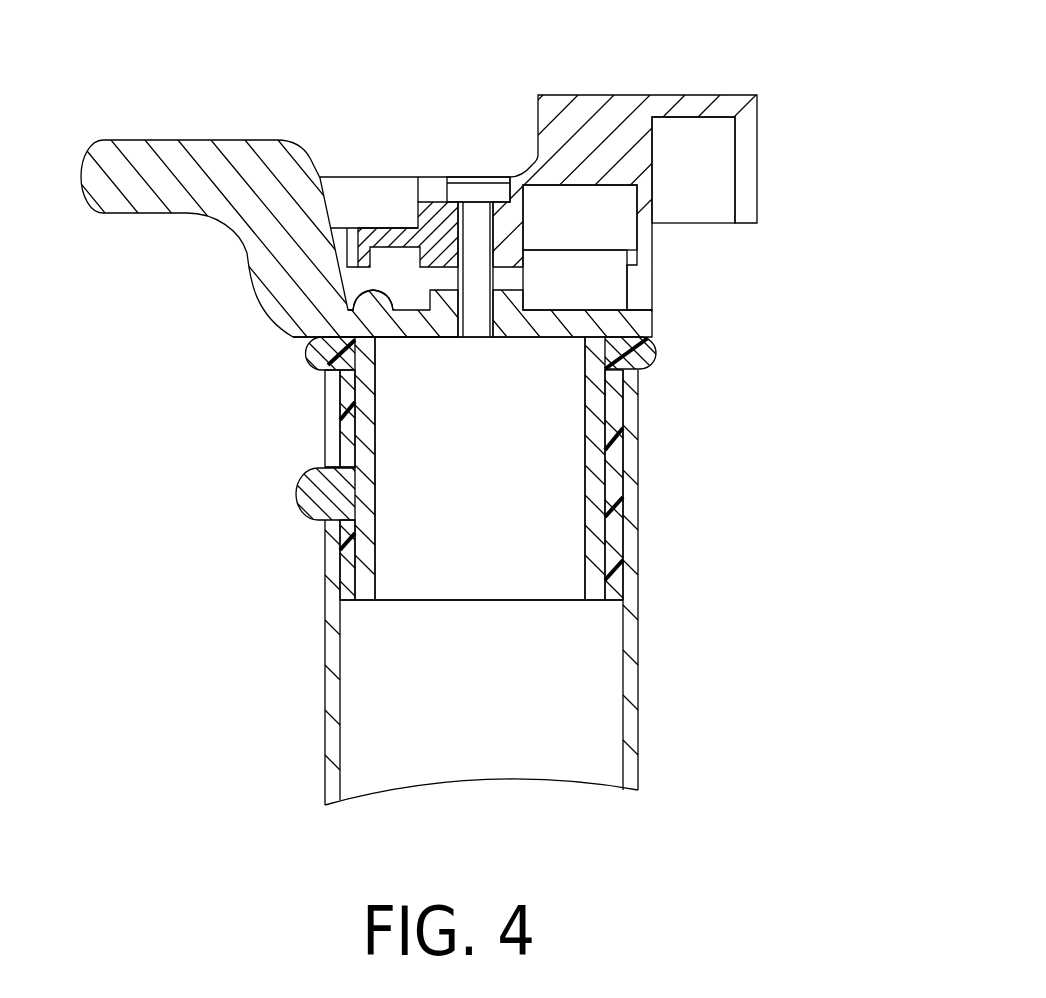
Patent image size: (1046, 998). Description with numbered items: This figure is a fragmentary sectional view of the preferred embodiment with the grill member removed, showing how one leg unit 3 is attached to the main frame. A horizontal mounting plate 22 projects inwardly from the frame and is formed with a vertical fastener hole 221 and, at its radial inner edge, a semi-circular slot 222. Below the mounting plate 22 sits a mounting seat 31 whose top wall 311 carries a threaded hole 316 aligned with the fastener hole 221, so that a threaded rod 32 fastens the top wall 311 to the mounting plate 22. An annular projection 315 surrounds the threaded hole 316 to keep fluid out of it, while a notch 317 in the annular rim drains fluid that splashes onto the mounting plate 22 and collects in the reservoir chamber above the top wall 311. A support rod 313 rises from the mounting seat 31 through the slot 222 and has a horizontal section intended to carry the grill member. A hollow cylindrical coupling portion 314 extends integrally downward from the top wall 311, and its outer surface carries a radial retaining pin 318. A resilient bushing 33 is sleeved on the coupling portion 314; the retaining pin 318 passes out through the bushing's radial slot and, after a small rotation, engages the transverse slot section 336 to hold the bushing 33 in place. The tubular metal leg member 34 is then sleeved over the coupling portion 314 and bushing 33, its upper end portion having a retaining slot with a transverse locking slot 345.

The leg unit 3 is at (652, 548).
The mounting plate 22 is at (427, 195).
The fastener hole 221 is at (512, 212).
The semi-circular slot 222 is at (345, 243).
The threaded rod 32 is at (473, 190).
The mounting seat 31 is at (630, 323).
The top wall 311 is at (345, 292).
The support rod 313 is at (137, 180).
The coupling portion 314 is at (595, 473).
The annular projection 315 is at (513, 280).
The threaded hole 316 is at (500, 318).
The notch 317 is at (638, 285).
The retaining pin 318 is at (322, 495).
The bushing 33 is at (345, 420).
The leg member 34 is at (627, 633).
The transverse slot section 336 is at (345, 530).
The locking slot 345 is at (336, 523).